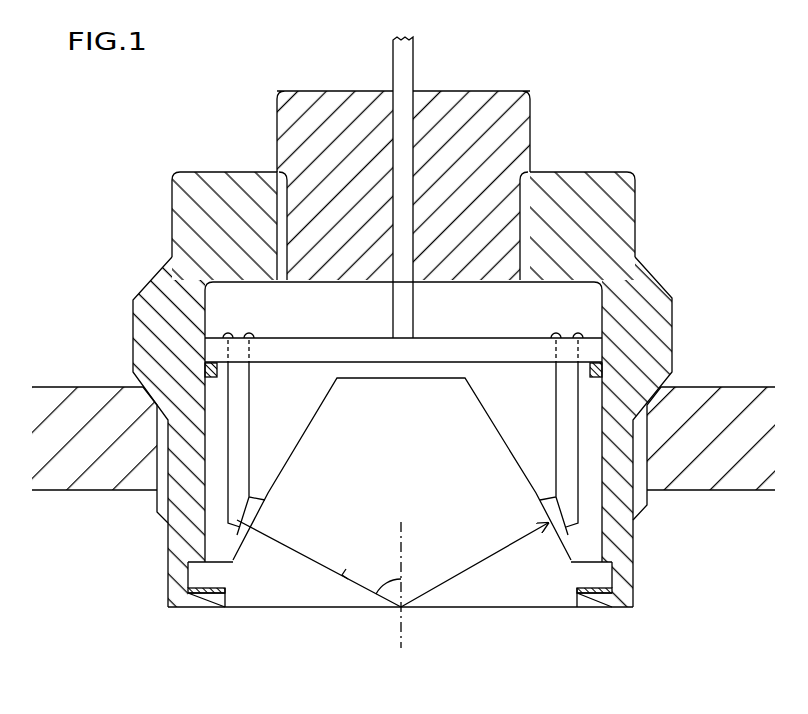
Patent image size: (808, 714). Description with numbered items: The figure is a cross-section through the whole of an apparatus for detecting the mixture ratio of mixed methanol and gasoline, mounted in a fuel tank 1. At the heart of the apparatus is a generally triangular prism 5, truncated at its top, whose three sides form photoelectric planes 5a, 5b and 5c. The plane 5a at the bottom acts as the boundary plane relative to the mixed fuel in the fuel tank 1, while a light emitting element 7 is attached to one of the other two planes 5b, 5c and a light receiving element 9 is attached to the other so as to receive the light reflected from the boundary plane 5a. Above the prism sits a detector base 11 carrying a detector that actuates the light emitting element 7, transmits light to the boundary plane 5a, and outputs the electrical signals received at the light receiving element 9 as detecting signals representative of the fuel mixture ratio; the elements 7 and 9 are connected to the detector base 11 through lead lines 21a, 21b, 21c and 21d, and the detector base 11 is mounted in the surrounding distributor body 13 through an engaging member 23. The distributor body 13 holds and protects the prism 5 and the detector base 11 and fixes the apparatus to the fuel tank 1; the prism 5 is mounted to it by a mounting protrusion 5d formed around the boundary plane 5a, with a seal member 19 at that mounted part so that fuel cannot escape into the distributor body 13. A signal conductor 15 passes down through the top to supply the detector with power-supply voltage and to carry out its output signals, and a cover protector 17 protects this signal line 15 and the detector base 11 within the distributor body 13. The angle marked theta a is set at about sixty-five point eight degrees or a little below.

The fuel tank 1 is at (763, 393).
The triangular prism 5 is at (337, 547).
The boundary plane 5a is at (485, 610).
The photoelectric plane 5b is at (135, 371).
The photoelectric plane 5c is at (603, 383).
The mounting protrusion 5d is at (603, 580).
The light emitting element 7 is at (168, 557).
The light receiving element 9 is at (610, 530).
The detector base 11 is at (283, 343).
The distributor body 13 is at (223, 176).
The signal conductor 15 is at (408, 72).
The cover protector 17 is at (488, 98).
The seal member 19 is at (208, 592).
The lead line 21a is at (227, 475).
The lead line 21b is at (250, 528).
The lead line 21c is at (603, 305).
The lead line 21d is at (602, 362).
The engaging member 23 is at (143, 298).